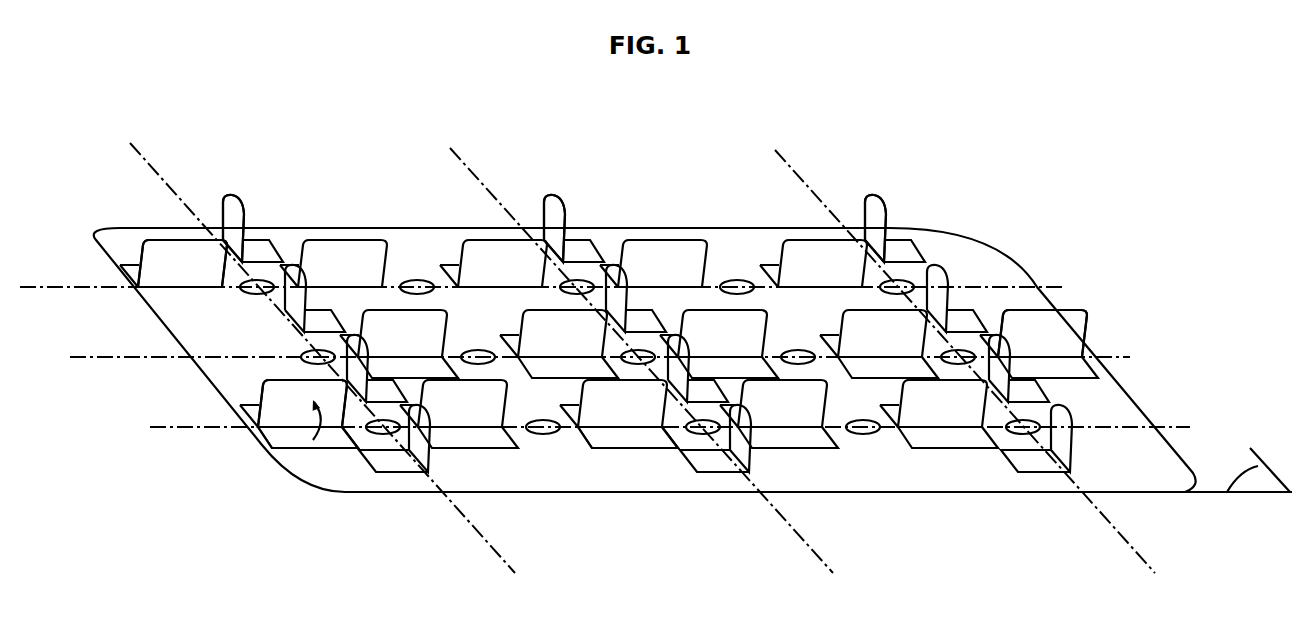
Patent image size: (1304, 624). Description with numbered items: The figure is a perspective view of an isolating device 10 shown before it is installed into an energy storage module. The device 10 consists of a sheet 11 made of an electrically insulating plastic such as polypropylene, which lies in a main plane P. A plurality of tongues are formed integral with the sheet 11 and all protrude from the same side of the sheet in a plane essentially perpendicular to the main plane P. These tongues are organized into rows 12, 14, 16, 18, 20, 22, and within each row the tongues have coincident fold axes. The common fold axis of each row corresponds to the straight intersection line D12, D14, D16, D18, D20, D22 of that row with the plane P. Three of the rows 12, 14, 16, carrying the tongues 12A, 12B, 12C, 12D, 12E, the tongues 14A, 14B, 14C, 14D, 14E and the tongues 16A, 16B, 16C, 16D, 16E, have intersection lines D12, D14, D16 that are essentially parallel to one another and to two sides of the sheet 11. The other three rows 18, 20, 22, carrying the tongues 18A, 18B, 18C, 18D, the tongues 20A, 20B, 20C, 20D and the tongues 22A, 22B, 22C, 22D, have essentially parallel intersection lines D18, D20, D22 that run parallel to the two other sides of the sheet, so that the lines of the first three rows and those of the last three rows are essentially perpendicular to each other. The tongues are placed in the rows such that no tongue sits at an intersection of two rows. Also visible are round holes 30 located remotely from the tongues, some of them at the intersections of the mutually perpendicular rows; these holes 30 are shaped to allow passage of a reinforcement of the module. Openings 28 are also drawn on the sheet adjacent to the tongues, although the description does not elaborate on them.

The isolating device 10 is at (545, 94).
The sheet 11 is at (913, 250).
The row 12 is at (285, 428).
The tongue 12A is at (312, 405).
The tongue 12B is at (470, 403).
The tongue 12C is at (633, 403).
The tongue 12D is at (800, 403).
The tongue 12E is at (953, 405).
The row 14 is at (1082, 333).
The tongue 14A is at (410, 335).
The tongue 14B is at (572, 347).
The tongue 14C is at (713, 345).
The tongue 14D is at (895, 345).
The tongue 14E is at (1047, 333).
The row 16 is at (158, 276).
The tongue 16A is at (170, 260).
The tongue 16B is at (360, 262).
The tongue 16C is at (488, 260).
The tongue 16D is at (683, 263).
The tongue 16E is at (817, 263).
The row 18 is at (213, 210).
The tongue 18A is at (232, 214).
The tongue 18B is at (294, 300).
The tongue 18C is at (352, 334).
The tongue 18D is at (422, 475).
The row 20 is at (539, 215).
The tongue 20A is at (549, 212).
The tongue 20B is at (614, 290).
The tongue 20C is at (673, 343).
The tongue 20D is at (738, 418).
The row 22 is at (859, 214).
The tongue 22A is at (871, 212).
The tongue 22B is at (937, 292).
The tongue 22C is at (1000, 345).
The tongue 22D is at (1062, 451).
The opening 28 is at (312, 463).
The round holes 30 is at (552, 429).
The straight intersection line D12 is at (1190, 430).
The straight intersection line D14 is at (1130, 357).
The straight intersection line D16 is at (1060, 287).
The straight intersection line D18 is at (132, 152).
The straight intersection line D20 is at (452, 152).
The straight intersection line D22 is at (778, 154).
The main plane P is at (1258, 469).